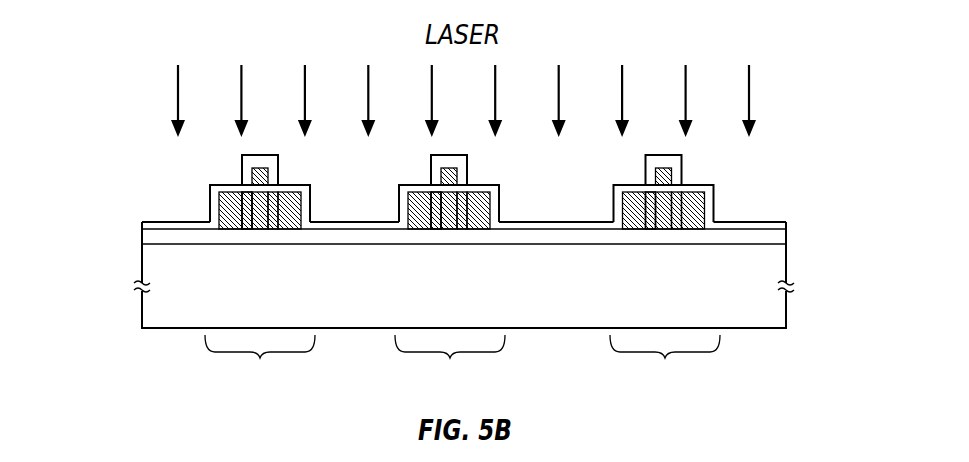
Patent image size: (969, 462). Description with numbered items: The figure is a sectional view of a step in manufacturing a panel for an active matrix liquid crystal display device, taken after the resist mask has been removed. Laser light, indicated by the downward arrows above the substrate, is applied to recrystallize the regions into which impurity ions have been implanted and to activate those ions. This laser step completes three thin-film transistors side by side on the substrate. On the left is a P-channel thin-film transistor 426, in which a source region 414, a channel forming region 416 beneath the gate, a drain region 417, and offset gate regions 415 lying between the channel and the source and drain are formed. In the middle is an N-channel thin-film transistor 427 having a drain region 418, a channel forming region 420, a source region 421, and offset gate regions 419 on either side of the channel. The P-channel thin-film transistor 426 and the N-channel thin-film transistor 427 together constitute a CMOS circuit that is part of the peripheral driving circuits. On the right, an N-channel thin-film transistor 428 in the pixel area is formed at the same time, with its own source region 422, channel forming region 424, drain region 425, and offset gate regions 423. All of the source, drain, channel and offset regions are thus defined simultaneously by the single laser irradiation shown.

The source region 414 is at (231, 194).
The offset gate regions 415 is at (247, 229).
The channel forming region 416 is at (263, 229).
The drain region 417 is at (299, 199).
The drain region 418 is at (418, 193).
The offset gate regions 419 is at (437, 229).
The channel forming region 420 is at (447, 229).
The source region 421 is at (478, 193).
The source region 422 is at (632, 193).
The offset gate regions 423 is at (652, 229).
The channel forming region 424 is at (665, 229).
The drain region 425 is at (693, 193).
The P-channel thin-film transistor 426 is at (340, 392).
The N-channel thin-film transistor 427 is at (532, 392).
The N-channel thin-film transistor 428 is at (750, 392).